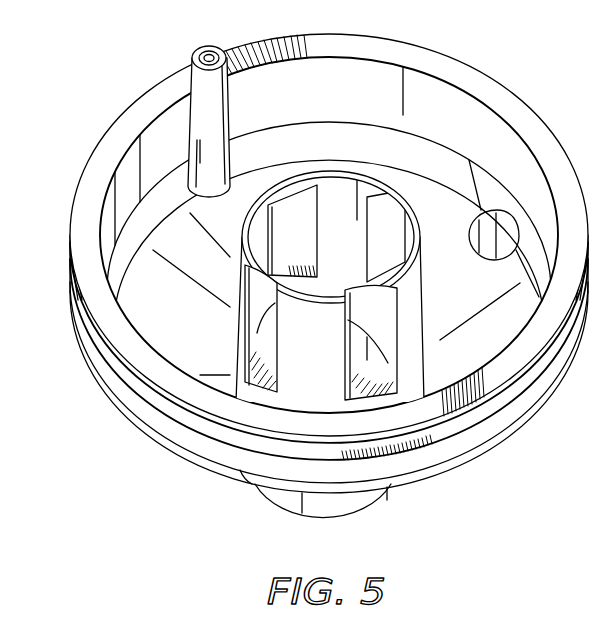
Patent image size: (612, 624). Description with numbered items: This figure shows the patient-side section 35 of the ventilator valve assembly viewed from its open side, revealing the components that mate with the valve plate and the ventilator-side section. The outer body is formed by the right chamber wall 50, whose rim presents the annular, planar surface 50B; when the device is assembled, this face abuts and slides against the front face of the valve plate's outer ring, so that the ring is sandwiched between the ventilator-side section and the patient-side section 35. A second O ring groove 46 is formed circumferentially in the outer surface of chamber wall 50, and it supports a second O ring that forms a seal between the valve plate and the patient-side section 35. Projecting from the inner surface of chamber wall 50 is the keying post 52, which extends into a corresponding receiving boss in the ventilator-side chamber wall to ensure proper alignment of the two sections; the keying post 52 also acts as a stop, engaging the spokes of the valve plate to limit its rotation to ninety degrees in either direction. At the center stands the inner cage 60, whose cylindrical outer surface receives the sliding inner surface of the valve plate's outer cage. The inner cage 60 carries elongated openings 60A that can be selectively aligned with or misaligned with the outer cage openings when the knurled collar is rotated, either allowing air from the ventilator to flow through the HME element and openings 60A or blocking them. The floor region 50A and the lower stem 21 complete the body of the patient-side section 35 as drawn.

The patient-side section 35 is at (307, 286).
The stem 21 is at (281, 501).
The second O ring groove 46 is at (522, 377).
The right chamber wall 50 is at (436, 449).
The floor 50A is at (428, 200).
The annular planar surface 50B is at (485, 87).
The keying post 52 is at (206, 108).
The inner cage 60 is at (288, 256).
The openings 60A is at (288, 203).